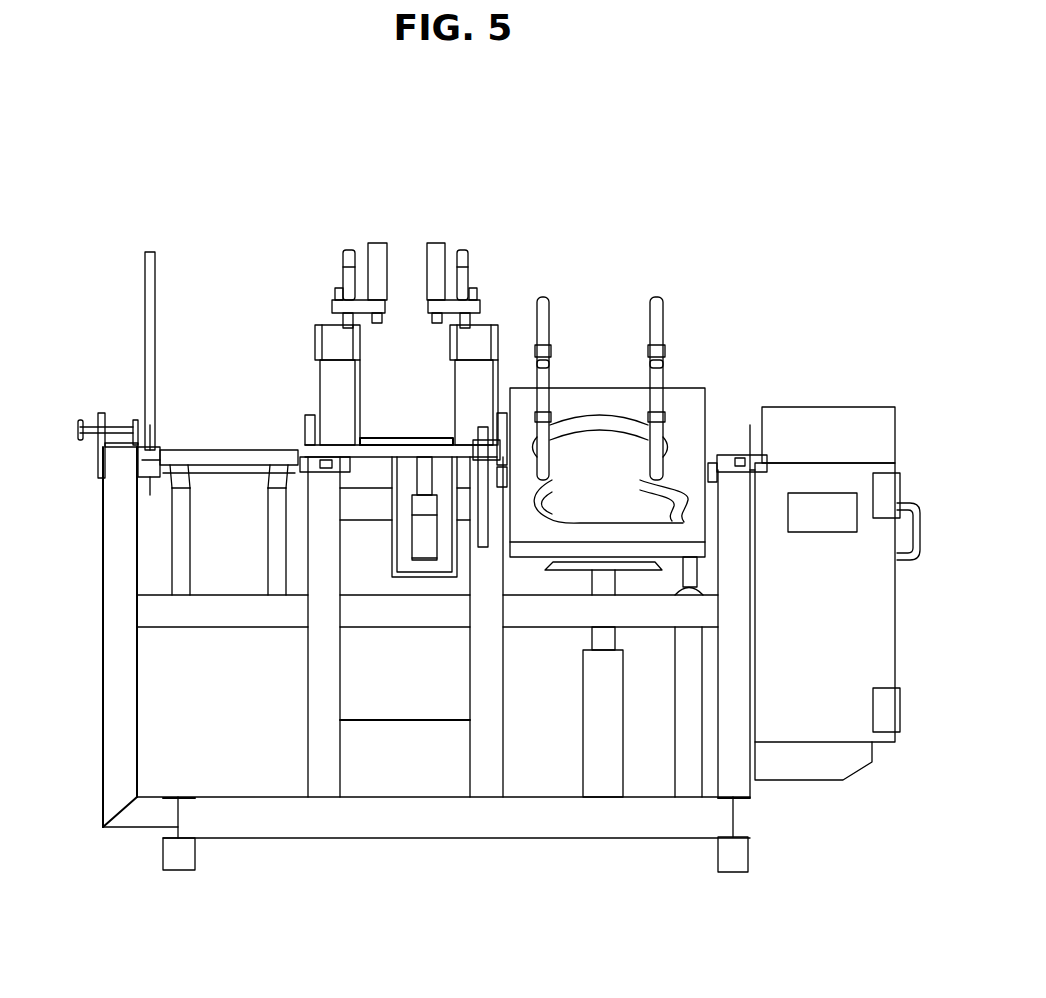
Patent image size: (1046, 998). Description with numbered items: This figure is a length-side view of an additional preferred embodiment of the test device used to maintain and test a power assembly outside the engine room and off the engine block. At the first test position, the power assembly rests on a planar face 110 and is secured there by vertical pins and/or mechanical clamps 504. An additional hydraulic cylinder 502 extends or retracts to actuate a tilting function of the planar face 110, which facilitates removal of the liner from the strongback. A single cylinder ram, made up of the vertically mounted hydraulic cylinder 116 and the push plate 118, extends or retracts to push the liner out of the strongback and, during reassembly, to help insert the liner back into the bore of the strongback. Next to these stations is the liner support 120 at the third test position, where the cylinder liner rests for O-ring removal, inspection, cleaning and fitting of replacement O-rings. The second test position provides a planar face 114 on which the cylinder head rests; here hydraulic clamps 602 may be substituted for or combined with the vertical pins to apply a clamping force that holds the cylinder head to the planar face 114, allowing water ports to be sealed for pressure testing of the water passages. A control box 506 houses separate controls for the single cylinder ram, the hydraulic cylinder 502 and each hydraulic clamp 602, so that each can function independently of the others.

The planar face 110 is at (602, 402).
The planar face 114 is at (402, 435).
The hydraulic cylinder 116 is at (597, 742).
The push plate 118 is at (562, 568).
The liner support 120 is at (218, 450).
The hydraulic cylinder 502 is at (687, 755).
The mechanical clamps 504 is at (650, 362).
The control box 506 is at (820, 478).
The hydraulic clamps 602 is at (437, 240).